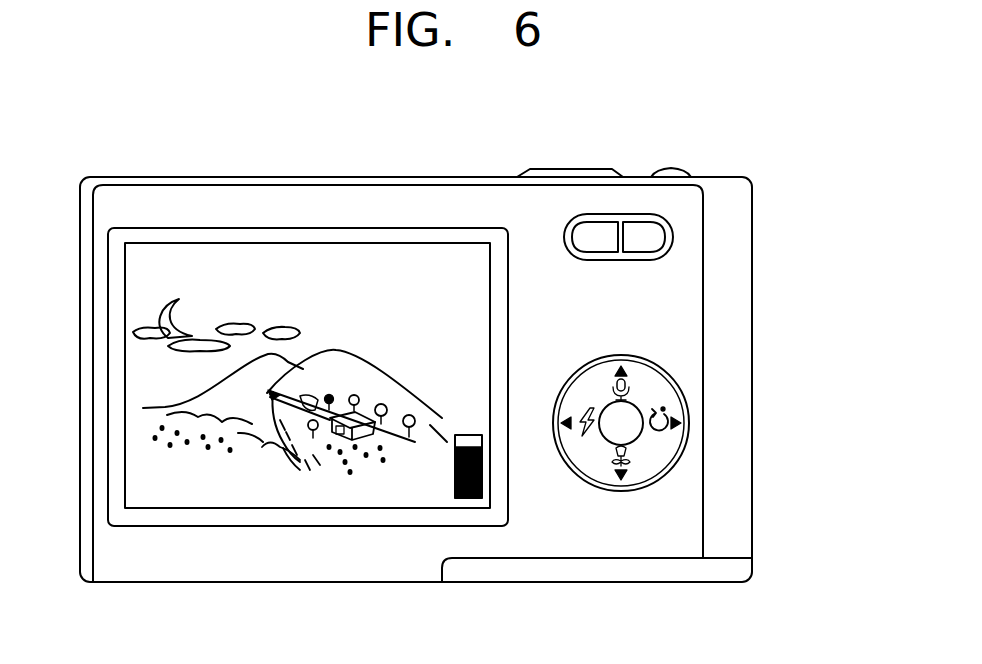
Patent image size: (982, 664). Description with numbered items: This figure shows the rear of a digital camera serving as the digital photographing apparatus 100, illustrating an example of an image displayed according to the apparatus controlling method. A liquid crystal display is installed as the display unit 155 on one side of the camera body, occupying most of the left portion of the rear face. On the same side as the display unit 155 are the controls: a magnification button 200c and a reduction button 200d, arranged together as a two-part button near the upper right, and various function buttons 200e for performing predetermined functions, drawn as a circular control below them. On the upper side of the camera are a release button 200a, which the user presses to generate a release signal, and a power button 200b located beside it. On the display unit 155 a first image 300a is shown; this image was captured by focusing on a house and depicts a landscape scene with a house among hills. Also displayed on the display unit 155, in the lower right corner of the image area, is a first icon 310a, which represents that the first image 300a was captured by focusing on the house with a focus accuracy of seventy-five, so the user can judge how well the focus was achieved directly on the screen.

The digital photographing apparatus 100 is at (752, 133).
The display unit 155 is at (272, 526).
The release button 200a is at (571, 168).
The power button 200b is at (675, 168).
The magnification button 200c is at (655, 241).
The reduction button 200d is at (598, 248).
The function buttons 200e is at (676, 423).
The first image 300a is at (300, 263).
The first icon 310a is at (469, 499).